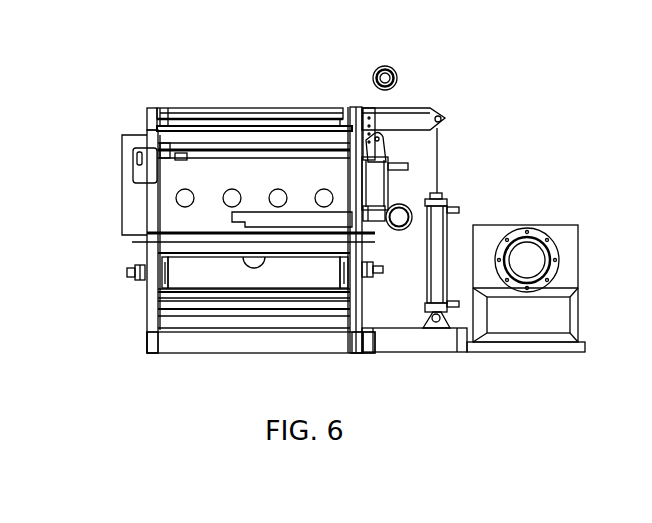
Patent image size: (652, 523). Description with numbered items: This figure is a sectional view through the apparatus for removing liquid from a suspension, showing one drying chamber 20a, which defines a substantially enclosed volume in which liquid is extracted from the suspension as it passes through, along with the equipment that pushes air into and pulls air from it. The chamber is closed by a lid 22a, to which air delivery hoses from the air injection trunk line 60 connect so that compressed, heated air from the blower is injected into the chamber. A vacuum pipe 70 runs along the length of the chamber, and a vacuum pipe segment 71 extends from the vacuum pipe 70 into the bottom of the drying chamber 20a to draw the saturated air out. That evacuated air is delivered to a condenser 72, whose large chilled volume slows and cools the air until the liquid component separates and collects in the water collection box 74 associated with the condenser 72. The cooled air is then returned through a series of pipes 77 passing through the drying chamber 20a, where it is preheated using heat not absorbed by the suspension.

The lid 22a is at (160, 108).
The pipes 77 is at (324, 189).
The air injection trunk line 60 is at (397, 75).
The vacuum pipe 70 is at (407, 207).
The drying chamber 20a is at (166, 178).
The vacuum pipe segment 71 is at (288, 222).
The water collection box 74 is at (578, 228).
The condenser 72 is at (545, 255).